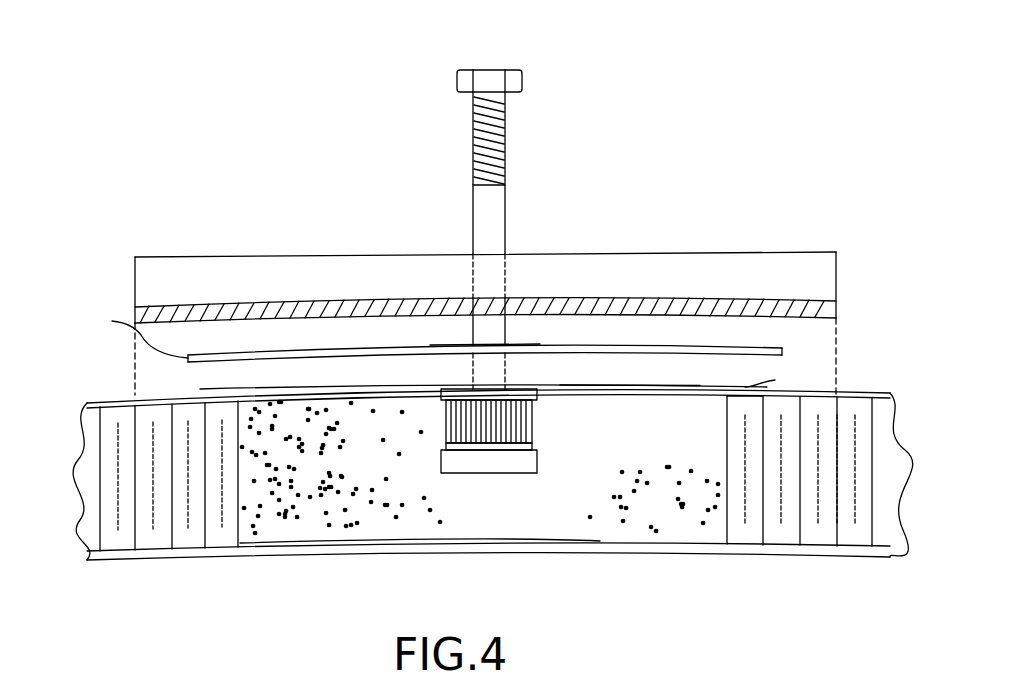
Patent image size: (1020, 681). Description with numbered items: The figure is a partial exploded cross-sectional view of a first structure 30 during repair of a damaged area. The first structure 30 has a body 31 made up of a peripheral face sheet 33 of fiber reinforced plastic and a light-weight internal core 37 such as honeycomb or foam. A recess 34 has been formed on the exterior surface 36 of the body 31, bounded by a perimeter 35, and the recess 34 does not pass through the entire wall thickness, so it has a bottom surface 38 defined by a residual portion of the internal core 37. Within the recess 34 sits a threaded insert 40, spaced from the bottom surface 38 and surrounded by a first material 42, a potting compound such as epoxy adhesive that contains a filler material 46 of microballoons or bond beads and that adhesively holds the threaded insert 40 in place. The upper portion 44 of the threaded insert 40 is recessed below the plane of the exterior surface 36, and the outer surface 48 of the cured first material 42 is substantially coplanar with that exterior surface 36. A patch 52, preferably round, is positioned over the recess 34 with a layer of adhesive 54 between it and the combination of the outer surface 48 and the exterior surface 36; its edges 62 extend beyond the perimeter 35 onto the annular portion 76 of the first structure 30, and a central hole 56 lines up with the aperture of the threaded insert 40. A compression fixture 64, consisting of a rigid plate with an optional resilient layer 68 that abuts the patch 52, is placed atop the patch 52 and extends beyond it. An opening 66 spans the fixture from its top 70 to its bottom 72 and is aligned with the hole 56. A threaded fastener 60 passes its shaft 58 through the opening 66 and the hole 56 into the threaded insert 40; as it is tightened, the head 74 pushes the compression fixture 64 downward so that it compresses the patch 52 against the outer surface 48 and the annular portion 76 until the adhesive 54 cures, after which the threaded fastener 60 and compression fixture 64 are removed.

The first structure 30 is at (70, 346).
The body 31 is at (150, 560).
The peripheral face sheet 33 is at (880, 395).
The recess 34 is at (290, 530).
The perimeter 35 is at (725, 394).
The exterior surface 36 is at (120, 395).
The internal core 37 is at (880, 440).
The bottom surface 38 is at (355, 528).
The threaded insert 40 is at (512, 441).
The first material 42 is at (587, 528).
The upper portion 44 is at (520, 388).
The filler material 46 is at (445, 520).
The outer surface 48 is at (585, 382).
The patch 52 is at (782, 350).
The layer of adhesive 54 is at (200, 388).
The hole 56 is at (483, 348).
The shaft 58 is at (474, 167).
The threaded fastener 60 is at (447, 173).
The edges 62 is at (136, 332).
The compression fixture 64 is at (512, 284).
The opening 66 is at (510, 275).
The resilient layer 68 is at (836, 310).
The top 70 is at (155, 253).
The bottom 72 is at (630, 315).
The head 74 is at (477, 66).
The annular portion 76 is at (767, 387).